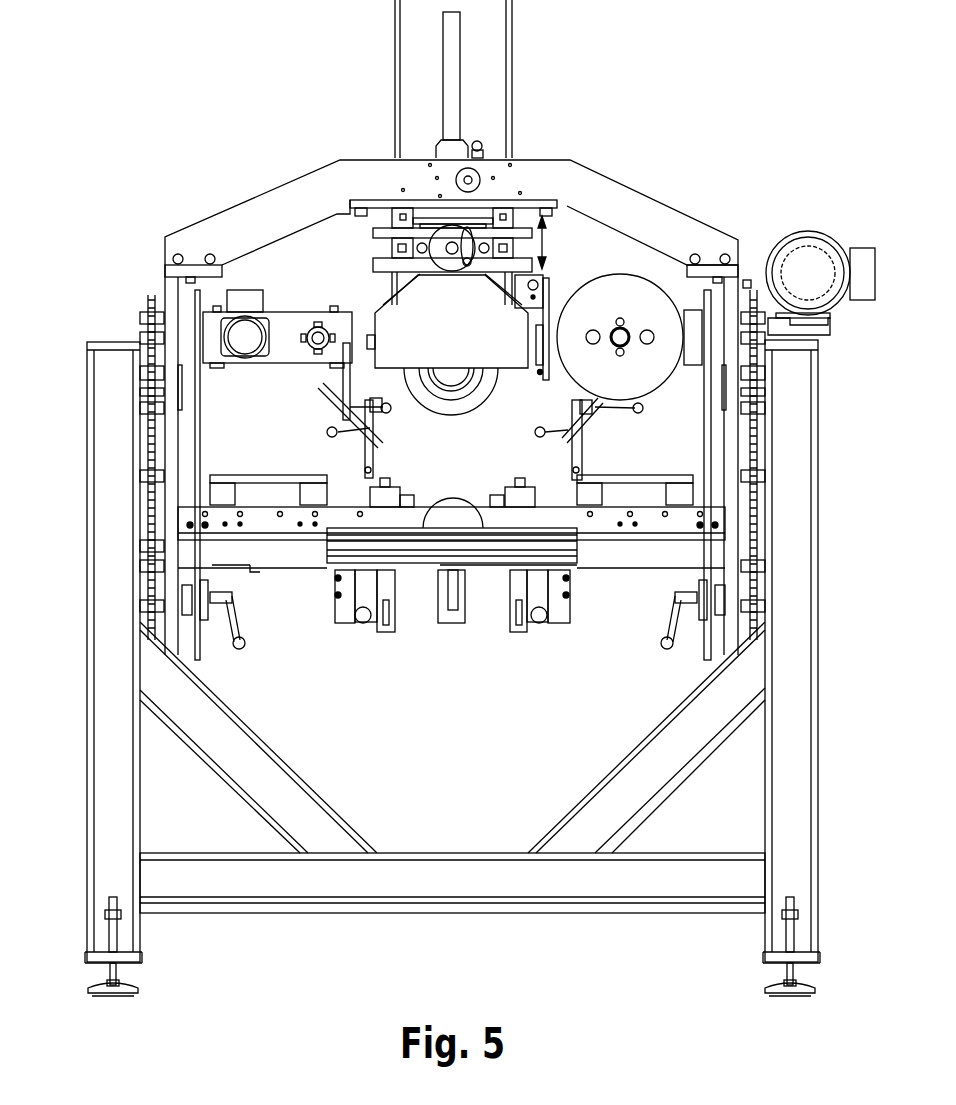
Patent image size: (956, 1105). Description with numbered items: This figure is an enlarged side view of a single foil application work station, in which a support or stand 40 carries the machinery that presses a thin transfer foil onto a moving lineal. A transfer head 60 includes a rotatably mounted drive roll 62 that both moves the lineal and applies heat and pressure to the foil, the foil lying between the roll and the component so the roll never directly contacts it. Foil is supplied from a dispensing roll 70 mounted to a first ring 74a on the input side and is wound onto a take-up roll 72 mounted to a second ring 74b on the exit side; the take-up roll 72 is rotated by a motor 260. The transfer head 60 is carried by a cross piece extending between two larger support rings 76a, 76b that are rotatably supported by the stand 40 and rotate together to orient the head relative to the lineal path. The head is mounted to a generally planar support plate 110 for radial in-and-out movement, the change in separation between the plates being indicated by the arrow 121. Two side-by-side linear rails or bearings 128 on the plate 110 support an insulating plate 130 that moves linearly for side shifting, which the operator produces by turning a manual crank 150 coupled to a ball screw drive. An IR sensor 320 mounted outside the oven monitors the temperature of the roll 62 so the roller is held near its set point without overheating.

The support or stand 40 is at (790, 680).
The transfer head 60 is at (495, 322).
The drive roll 62 is at (447, 395).
The dispensing roll 70 is at (625, 295).
The take-up roll 72 is at (307, 327).
The first rotatably mounted ring 74a is at (707, 443).
The second rotatably mounted ring 74b is at (198, 455).
The support ring 76a is at (737, 287).
The support ring 76b is at (170, 453).
The support plate 110 is at (512, 250).
The arrow 121 is at (545, 245).
The linear rails or bearings 128 is at (420, 237).
The insulating plate 130 is at (370, 265).
The manual crank 150 is at (452, 265).
The motor 260 is at (243, 315).
The IR sensor 320 is at (545, 380).